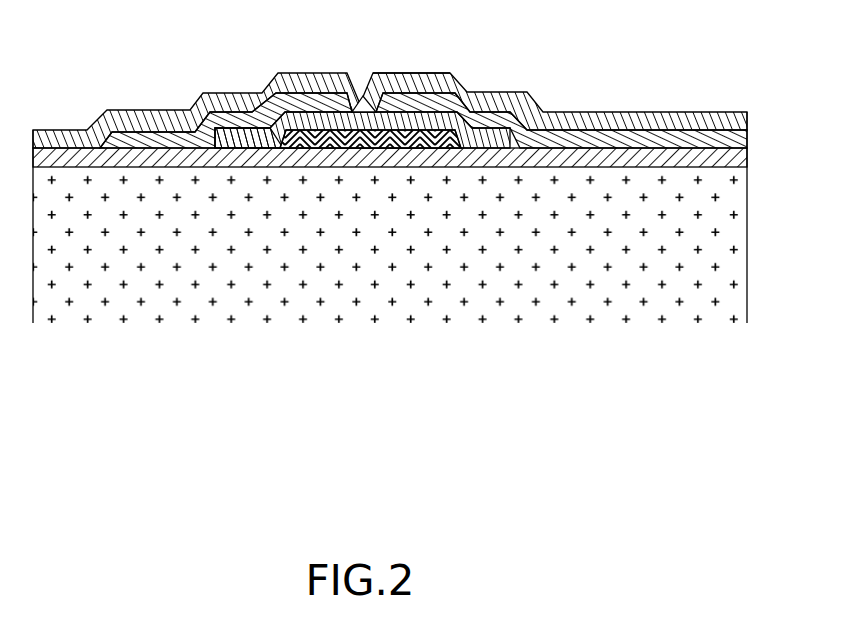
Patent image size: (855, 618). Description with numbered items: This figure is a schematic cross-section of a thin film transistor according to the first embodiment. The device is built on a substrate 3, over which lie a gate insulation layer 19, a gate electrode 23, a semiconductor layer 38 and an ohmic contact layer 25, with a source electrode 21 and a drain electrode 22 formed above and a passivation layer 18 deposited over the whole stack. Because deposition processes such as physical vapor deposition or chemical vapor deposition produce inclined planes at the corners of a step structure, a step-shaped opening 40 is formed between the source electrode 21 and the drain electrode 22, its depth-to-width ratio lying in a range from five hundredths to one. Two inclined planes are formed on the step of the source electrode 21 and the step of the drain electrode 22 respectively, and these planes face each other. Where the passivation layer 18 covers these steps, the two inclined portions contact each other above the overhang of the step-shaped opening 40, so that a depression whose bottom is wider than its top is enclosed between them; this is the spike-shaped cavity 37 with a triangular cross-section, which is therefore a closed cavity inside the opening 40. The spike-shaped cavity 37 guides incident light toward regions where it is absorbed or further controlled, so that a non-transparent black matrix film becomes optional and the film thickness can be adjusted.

The substrate 3 is at (748, 250).
The gate insulation layer 19 is at (748, 158).
The gate electrode 23 is at (358, 150).
The semiconductor layer 38 is at (240, 140).
The ohmic contact layer 25 is at (242, 128).
The source electrode 21 is at (300, 112).
The drain electrode 22 is at (430, 95).
The passivation layer 18 is at (582, 112).
The spike-shaped cavity 37 is at (357, 98).
The step-shaped opening 40 is at (393, 76).